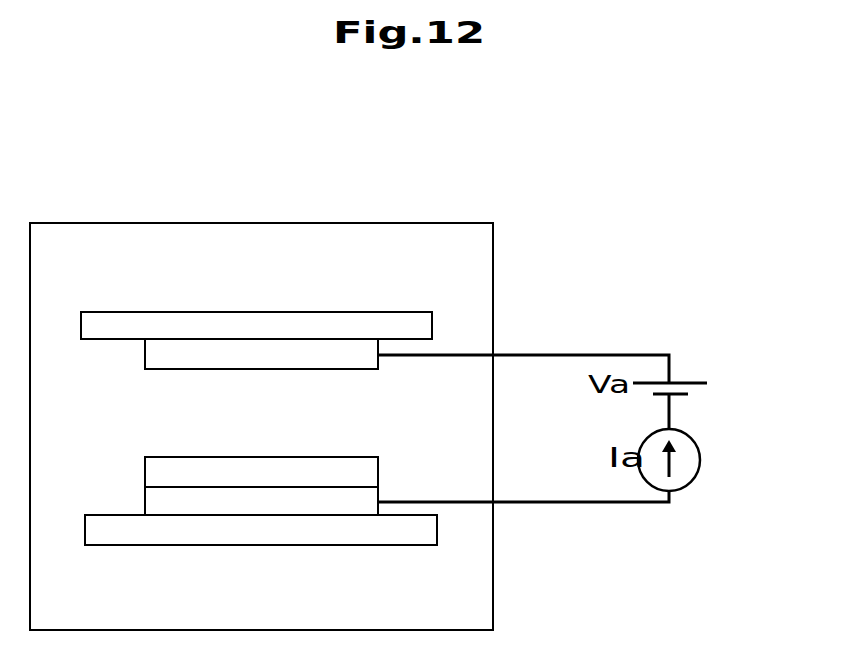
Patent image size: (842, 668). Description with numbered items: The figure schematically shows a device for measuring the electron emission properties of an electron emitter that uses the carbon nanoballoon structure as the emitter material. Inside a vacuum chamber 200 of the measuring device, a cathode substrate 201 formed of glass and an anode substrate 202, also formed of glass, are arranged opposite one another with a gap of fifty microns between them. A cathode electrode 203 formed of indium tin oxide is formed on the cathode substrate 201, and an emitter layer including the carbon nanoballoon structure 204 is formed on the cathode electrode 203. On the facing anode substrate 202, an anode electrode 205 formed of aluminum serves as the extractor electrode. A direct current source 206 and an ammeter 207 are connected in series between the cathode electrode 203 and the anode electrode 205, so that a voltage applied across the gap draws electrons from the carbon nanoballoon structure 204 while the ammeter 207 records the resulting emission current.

The vacuum chamber 200 is at (447, 222).
The cathode substrate 201 is at (148, 538).
The anode substrate 202 is at (333, 317).
The cathode electrode 203 is at (237, 508).
The carbon nanoballoon structure 204 is at (302, 477).
The anode electrode 205 is at (182, 350).
The direct current source 206 is at (698, 379).
The ammeter 207 is at (695, 458).